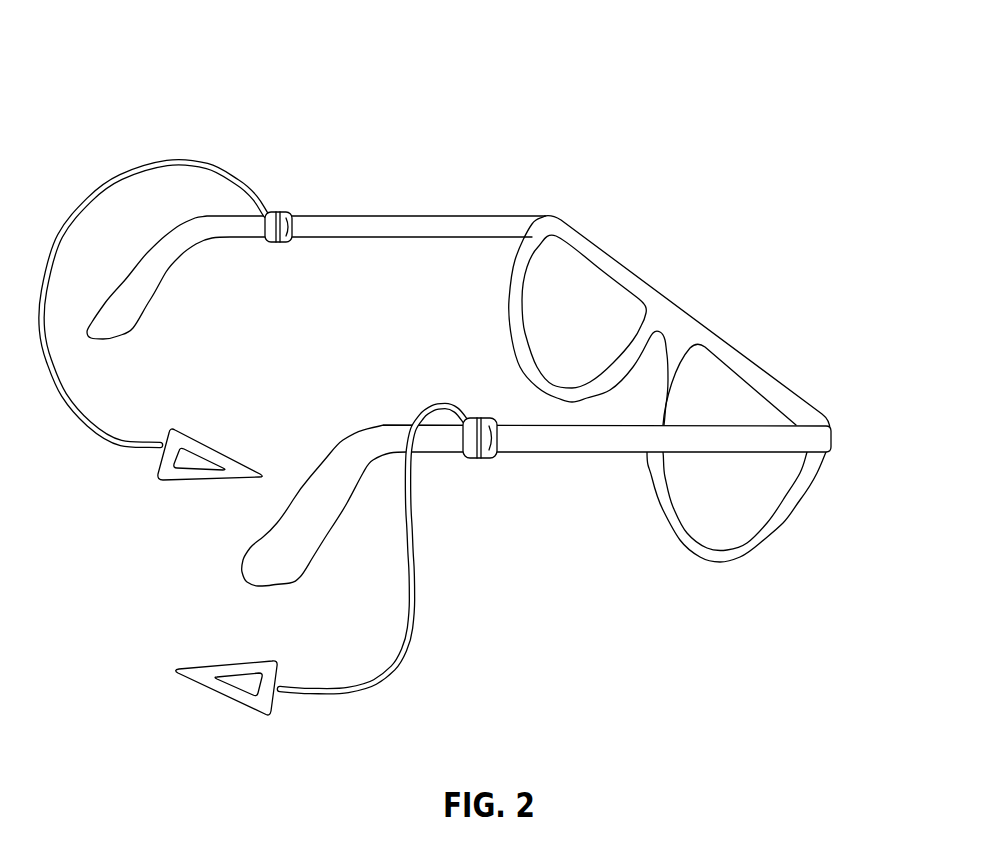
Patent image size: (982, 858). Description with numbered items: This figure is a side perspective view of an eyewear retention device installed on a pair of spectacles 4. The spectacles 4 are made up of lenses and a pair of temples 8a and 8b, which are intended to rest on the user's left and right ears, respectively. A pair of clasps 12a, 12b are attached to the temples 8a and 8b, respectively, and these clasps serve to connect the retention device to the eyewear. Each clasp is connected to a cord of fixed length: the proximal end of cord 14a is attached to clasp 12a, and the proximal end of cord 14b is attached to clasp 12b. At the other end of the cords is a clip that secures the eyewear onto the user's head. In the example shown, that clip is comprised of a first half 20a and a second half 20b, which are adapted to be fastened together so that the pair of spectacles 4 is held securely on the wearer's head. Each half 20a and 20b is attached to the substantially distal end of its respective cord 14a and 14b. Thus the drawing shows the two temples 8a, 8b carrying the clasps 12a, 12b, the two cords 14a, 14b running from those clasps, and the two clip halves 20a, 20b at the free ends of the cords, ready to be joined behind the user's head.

The pair of spectacles 4 is at (752, 218).
The temple 8a is at (439, 224).
The temple 8b is at (585, 442).
The clasp 12a is at (284, 216).
The clasp 12b is at (494, 442).
The cord 14a is at (132, 164).
The cord 14b is at (413, 628).
The first half 20a is at (172, 478).
The second half 20b is at (222, 688).